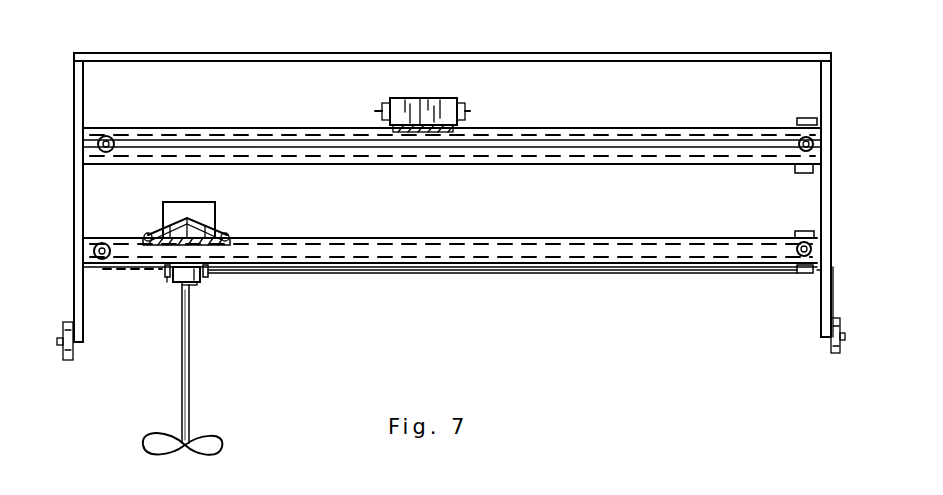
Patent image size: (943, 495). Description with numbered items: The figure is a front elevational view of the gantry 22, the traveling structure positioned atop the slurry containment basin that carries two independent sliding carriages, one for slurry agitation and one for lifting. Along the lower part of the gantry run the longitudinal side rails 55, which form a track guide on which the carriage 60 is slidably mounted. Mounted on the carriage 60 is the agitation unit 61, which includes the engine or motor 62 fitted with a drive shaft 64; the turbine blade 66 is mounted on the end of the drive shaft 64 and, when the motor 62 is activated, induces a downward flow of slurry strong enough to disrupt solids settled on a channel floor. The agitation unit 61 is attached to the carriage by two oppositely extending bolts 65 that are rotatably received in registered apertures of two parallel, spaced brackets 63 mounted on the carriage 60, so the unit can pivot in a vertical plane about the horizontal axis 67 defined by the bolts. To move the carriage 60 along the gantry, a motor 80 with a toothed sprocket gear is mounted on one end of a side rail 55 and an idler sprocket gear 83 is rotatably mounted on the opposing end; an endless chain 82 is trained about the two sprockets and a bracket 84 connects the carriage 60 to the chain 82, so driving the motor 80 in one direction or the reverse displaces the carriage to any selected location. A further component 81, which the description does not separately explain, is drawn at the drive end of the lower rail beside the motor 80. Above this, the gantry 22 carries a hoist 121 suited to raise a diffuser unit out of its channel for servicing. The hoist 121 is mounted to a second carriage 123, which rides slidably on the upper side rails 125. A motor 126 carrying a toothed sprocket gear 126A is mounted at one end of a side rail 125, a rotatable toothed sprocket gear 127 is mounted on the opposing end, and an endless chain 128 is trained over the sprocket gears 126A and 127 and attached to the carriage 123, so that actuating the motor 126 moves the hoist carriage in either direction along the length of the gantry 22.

The gantry 22 is at (143, 57).
The side rails 55 is at (418, 250).
The carriage 60 is at (236, 250).
The agitation unit 61 is at (190, 350).
The motor 62 is at (193, 287).
The brackets 63 is at (167, 278).
The drive shaft 64 is at (190, 397).
The bolts 65 is at (162, 278).
The turbine blade 66 is at (227, 443).
The horizontal axis 67 is at (130, 270).
The motor 80 is at (803, 231).
The bearing block 81 is at (792, 258).
The endless chain 82 is at (574, 268).
The idler sprocket gear 83 is at (94, 247).
The bracket 84 is at (233, 237).
The hoist 121 is at (437, 98).
The carriage 123 is at (423, 135).
The side rails 125 is at (565, 156).
The motor 126 is at (807, 118).
The toothed sprocket gear 126A is at (812, 136).
The sprocket gear 127 is at (109, 137).
The endless chain 128 is at (252, 133).